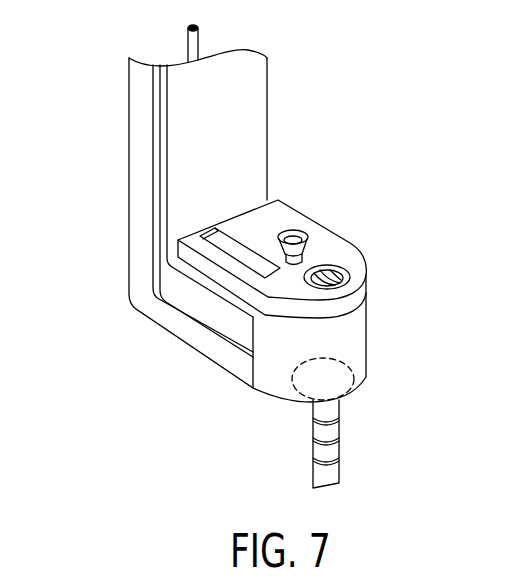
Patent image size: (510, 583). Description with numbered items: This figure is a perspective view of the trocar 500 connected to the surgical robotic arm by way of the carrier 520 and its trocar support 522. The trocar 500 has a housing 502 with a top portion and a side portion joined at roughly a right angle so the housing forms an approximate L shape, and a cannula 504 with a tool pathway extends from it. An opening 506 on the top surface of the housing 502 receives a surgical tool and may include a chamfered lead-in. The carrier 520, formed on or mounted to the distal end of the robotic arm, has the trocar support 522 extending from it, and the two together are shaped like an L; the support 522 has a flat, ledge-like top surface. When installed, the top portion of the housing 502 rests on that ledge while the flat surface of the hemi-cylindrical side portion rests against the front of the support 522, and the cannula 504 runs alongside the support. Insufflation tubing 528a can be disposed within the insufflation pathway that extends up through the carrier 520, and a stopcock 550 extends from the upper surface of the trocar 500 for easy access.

The trocar 500 is at (320, 314).
The housing 502 is at (367, 335).
The cannula 504 is at (340, 440).
The opening 506 is at (342, 267).
The carrier 520 is at (163, 216).
The trocar support 522 is at (183, 345).
The insufflation tubing 528a is at (203, 42).
The stopcock 550 is at (300, 232).